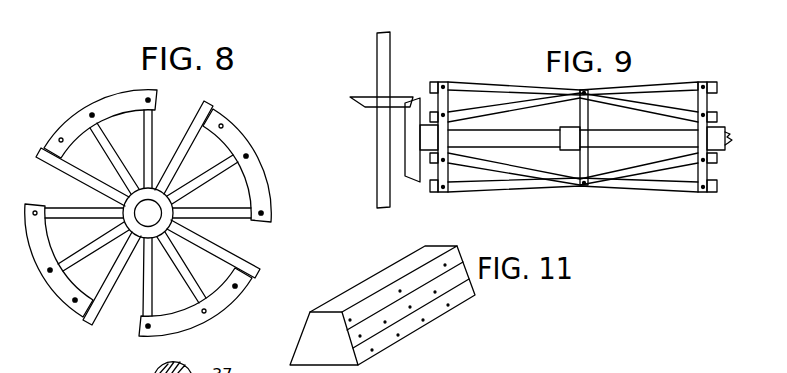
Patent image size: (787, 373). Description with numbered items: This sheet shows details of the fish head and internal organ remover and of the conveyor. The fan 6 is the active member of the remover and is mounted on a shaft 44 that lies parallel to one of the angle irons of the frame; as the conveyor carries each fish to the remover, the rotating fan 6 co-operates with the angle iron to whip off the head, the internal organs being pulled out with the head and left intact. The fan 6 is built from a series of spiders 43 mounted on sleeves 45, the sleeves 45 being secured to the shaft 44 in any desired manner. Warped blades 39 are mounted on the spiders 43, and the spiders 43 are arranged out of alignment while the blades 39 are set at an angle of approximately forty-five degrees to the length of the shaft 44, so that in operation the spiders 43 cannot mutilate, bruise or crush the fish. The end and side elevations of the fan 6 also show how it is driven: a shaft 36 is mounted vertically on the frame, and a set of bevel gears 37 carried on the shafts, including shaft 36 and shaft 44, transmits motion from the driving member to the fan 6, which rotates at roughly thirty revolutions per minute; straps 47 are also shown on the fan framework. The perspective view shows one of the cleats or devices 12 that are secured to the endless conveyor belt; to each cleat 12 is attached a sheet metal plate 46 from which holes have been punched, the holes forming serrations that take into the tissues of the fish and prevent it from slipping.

In FIG. 8, the fan 6 is at (148, 198).
In FIG. 9, the fan 6 is at (576, 119).
In FIG. 8, the warped blades 39 is at (130, 96).
In FIG. 9, the warped blades 39 is at (685, 87).
In FIG. 8, the spiders 43 is at (197, 128).
In FIG. 9, the spiders 43 is at (589, 125).
In FIG. 8, the shaft 44 is at (148, 213).
In FIG. 9, the shaft 44 is at (730, 136).
In FIG. 9, the shaft 36 is at (387, 68).
In FIG. 9, the bevel gears 37 is at (366, 104).
In FIG. 9, the sleeves 45 is at (572, 137).
In FIG. 9, the strap 47 is at (452, 127).
In FIG. 11, the cleats or devices 12 is at (382, 305).
In FIG. 11, the sheet metal plate 46 is at (411, 305).